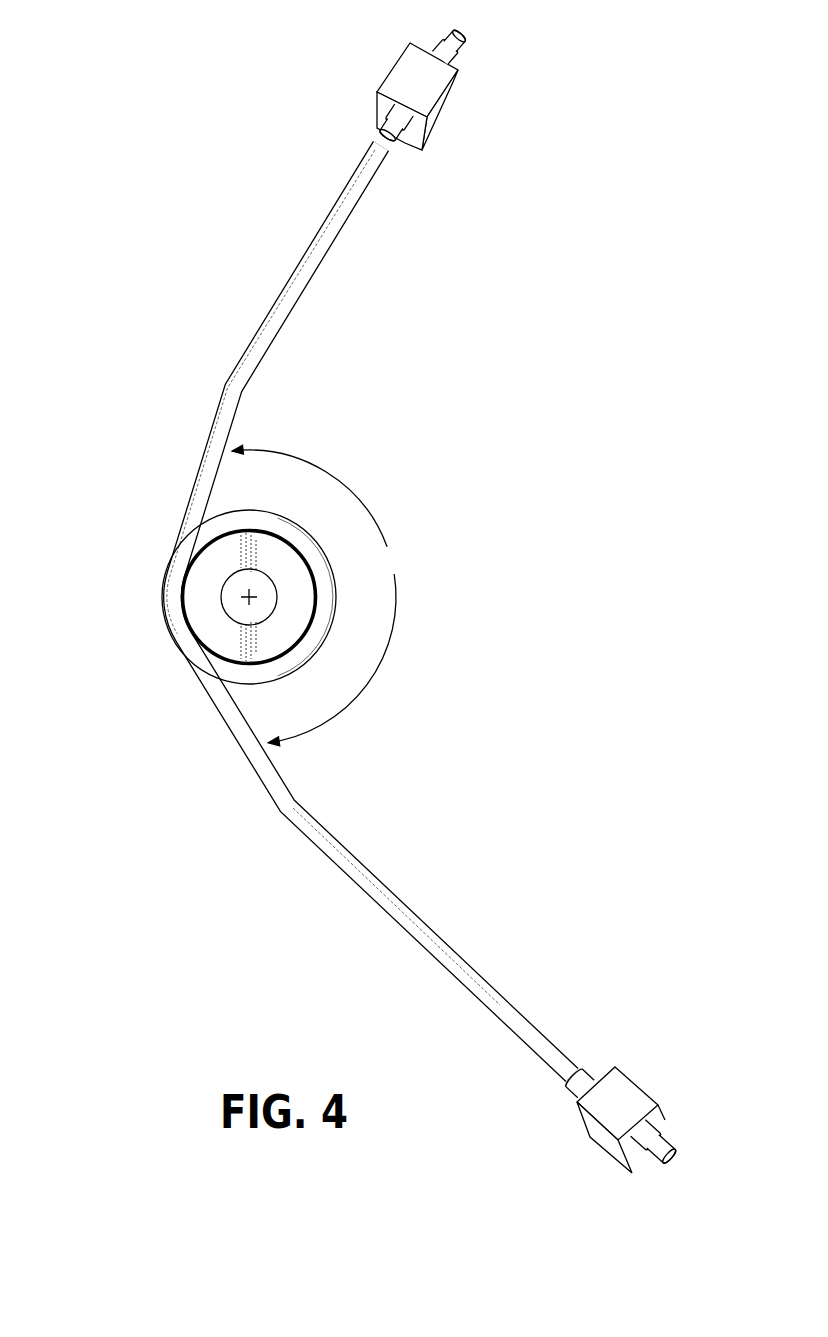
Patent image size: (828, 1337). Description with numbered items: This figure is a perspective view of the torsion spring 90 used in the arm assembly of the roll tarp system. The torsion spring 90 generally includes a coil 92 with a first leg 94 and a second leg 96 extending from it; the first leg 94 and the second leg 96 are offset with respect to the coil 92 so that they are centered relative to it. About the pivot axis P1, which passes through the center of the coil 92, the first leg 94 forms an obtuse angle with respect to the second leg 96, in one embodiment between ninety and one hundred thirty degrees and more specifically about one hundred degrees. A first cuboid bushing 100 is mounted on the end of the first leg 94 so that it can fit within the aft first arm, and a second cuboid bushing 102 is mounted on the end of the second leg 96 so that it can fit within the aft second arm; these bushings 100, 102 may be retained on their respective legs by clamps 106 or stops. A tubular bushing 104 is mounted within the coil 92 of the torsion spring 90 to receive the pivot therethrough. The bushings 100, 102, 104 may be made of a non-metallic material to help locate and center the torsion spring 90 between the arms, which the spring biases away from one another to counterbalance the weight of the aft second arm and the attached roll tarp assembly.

The torsion spring 90 is at (628, 286).
The coil 92 is at (192, 547).
The first leg 94 is at (428, 930).
The second leg 96 is at (292, 298).
The first cuboid bushing 100 is at (626, 1093).
The second cuboid bushing 102 is at (440, 113).
The tubular bushing 104 is at (197, 588).
The clamps 106 is at (388, 125).
The pivot axis P1 is at (240, 602).